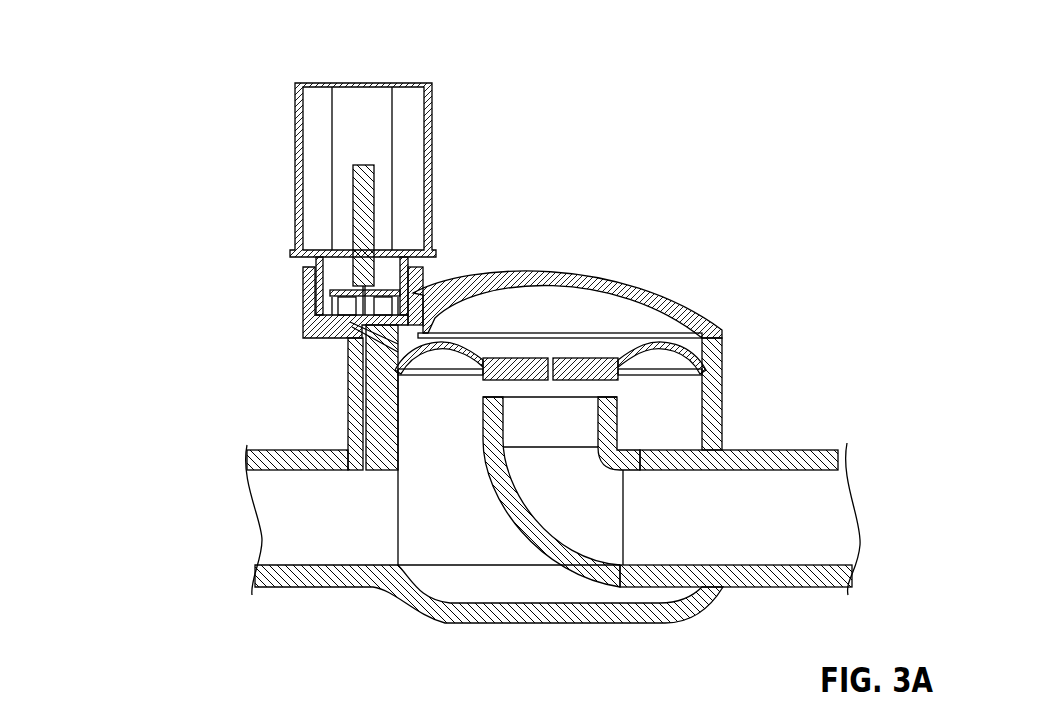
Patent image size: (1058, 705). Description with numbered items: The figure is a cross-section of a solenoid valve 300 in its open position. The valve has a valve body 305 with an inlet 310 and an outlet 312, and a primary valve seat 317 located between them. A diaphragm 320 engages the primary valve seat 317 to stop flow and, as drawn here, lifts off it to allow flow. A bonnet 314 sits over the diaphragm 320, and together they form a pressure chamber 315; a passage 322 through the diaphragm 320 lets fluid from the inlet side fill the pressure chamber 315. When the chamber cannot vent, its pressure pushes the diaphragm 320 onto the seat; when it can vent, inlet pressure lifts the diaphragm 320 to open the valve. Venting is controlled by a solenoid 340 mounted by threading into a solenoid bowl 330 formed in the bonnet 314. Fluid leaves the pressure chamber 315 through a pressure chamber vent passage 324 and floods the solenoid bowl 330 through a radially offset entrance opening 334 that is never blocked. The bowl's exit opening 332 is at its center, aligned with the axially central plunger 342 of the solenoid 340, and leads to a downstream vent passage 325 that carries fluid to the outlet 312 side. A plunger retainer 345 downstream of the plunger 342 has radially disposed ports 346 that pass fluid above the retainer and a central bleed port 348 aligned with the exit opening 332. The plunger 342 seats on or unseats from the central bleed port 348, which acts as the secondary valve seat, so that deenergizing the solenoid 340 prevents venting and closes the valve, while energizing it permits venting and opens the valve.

The solenoid valve 300 is at (116, 47).
The valve body 305 is at (647, 625).
The inlet 310 is at (810, 482).
The outlet 312 is at (335, 550).
The bonnet 314 is at (660, 290).
The pressure chamber 315 is at (616, 310).
The primary valve seat 317 is at (618, 402).
The diaphragm 320 is at (722, 335).
The passage 322 is at (551, 357).
The pressure chamber vent passage 324 is at (448, 318).
The downstream vent passage 325 is at (358, 450).
The solenoid bowl 330 is at (301, 317).
The exit opening 332 is at (350, 322).
The entrance opening 334 is at (350, 352).
The solenoid 340 is at (290, 134).
The plunger 342 is at (376, 175).
The plunger retainer 345 is at (412, 268).
The radially disposed ports 346 is at (347, 307).
The central bleed port 348 is at (357, 292).